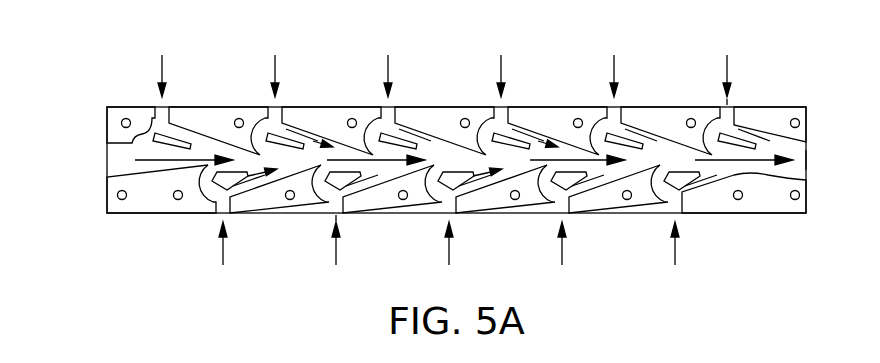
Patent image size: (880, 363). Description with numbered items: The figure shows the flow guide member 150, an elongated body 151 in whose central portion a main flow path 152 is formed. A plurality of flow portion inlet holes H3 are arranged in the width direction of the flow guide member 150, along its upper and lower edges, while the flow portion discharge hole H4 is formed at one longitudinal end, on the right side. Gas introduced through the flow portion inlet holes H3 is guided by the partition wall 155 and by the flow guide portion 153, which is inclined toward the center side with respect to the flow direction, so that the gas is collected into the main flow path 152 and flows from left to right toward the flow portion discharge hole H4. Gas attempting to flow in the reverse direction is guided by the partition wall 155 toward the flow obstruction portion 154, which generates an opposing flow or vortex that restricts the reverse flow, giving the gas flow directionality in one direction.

The flow guide member 150 is at (138, 53).
The body 151 is at (137, 200).
The main flow path 152 is at (514, 158).
The flow guide portion 153 is at (587, 152).
The flow obstruction portion 154 is at (210, 200).
The partition wall 155 is at (417, 200).
The flow portion inlet hole H3 is at (730, 103).
The flow portion discharge hole H4 is at (807, 152).